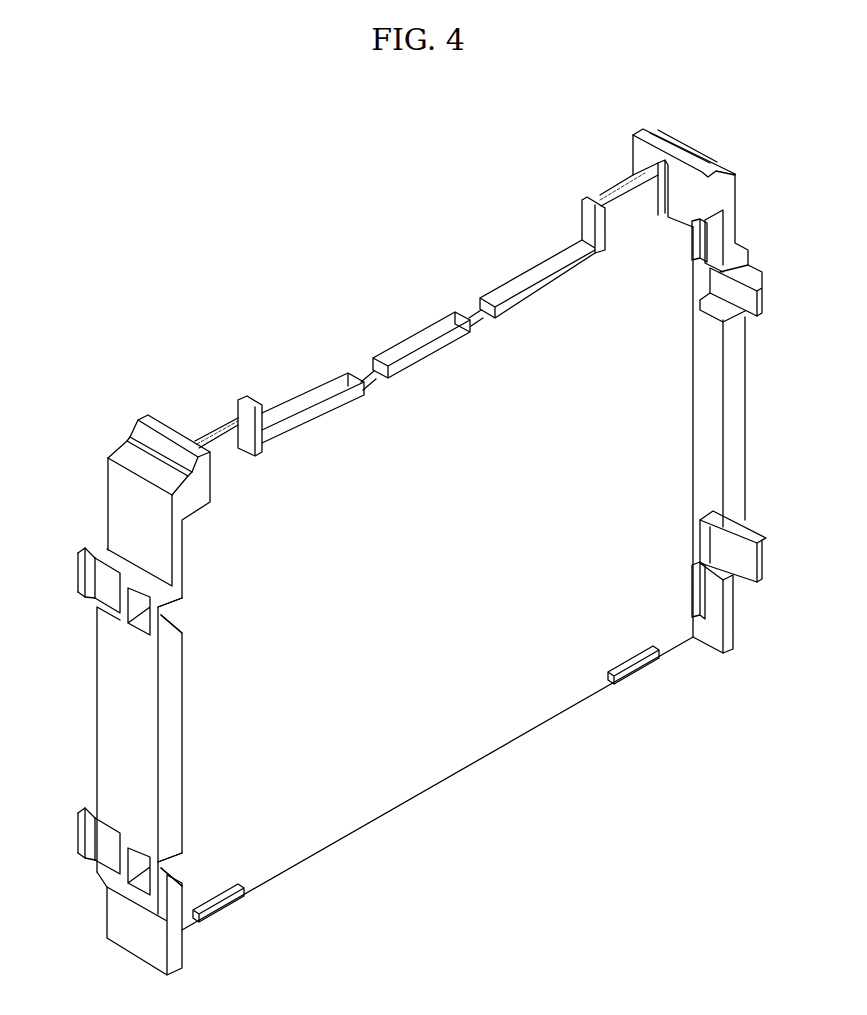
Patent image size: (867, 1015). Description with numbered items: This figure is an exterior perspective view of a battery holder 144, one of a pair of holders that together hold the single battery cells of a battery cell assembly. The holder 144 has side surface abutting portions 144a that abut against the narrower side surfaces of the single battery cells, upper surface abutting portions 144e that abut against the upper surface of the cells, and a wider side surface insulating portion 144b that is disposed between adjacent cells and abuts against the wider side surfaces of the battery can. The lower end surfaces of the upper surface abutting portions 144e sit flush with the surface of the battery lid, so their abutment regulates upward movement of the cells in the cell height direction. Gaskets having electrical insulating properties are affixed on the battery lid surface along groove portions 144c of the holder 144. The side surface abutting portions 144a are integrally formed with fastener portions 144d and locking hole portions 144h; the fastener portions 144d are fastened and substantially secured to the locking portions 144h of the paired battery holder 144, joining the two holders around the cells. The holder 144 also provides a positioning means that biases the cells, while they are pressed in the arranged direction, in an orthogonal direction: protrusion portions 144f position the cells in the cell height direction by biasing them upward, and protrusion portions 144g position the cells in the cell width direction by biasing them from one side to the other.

The battery holder 144 is at (404, 171).
The side surface abutting portion 144a is at (182, 762).
The wider side surface insulating portion 144b is at (456, 764).
The groove portion 144c is at (369, 378).
The fastener portion 144d is at (78, 574).
The upper surface abutting portion 144e is at (283, 442).
The protrusion portion 144f is at (234, 910).
The protrusion portion 144g is at (690, 246).
The locking hole portion 144h is at (162, 606).